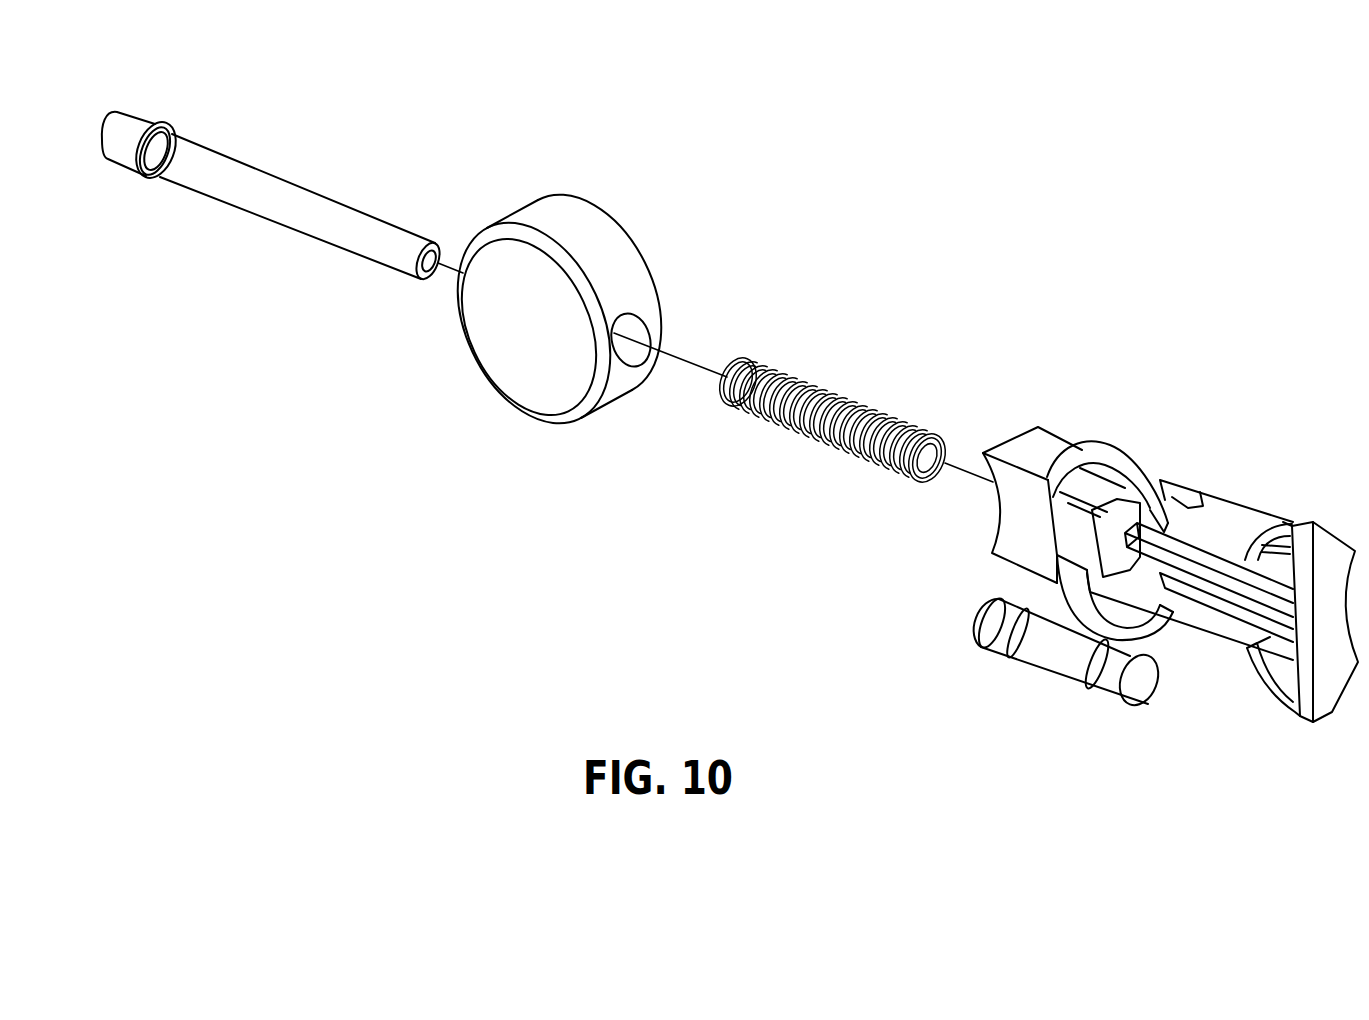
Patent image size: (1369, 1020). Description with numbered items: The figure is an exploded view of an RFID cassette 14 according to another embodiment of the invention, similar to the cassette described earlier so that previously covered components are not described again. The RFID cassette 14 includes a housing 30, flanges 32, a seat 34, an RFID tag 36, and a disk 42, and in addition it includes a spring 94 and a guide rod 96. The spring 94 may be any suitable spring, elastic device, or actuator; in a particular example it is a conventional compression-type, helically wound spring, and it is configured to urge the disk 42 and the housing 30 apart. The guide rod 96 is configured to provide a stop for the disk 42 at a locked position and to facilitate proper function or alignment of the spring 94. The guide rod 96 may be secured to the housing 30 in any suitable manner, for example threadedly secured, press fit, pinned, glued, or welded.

The RFID cassette 14 is at (947, 278).
The housing 30 is at (1220, 518).
The flanges 32 is at (1113, 455).
The seat 34 is at (1202, 668).
The RFID tag 36 is at (1057, 660).
The disk 42 is at (607, 243).
The spring 94 is at (836, 392).
The guide rod 96 is at (283, 190).